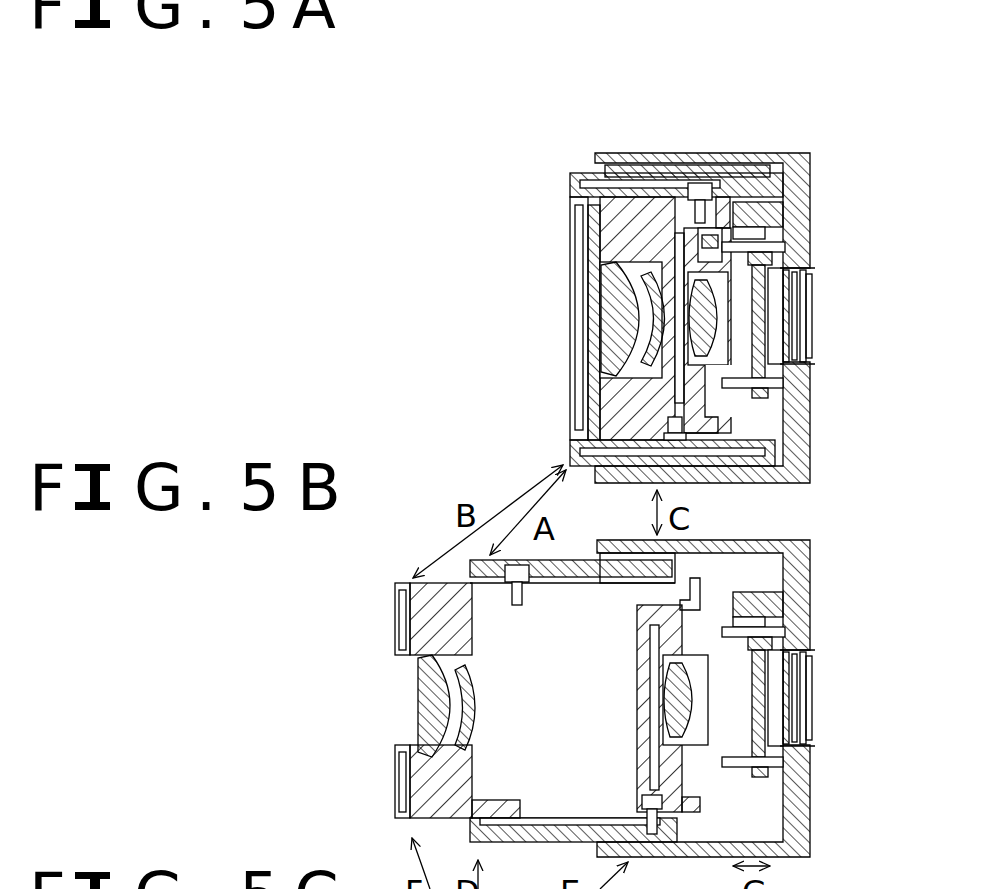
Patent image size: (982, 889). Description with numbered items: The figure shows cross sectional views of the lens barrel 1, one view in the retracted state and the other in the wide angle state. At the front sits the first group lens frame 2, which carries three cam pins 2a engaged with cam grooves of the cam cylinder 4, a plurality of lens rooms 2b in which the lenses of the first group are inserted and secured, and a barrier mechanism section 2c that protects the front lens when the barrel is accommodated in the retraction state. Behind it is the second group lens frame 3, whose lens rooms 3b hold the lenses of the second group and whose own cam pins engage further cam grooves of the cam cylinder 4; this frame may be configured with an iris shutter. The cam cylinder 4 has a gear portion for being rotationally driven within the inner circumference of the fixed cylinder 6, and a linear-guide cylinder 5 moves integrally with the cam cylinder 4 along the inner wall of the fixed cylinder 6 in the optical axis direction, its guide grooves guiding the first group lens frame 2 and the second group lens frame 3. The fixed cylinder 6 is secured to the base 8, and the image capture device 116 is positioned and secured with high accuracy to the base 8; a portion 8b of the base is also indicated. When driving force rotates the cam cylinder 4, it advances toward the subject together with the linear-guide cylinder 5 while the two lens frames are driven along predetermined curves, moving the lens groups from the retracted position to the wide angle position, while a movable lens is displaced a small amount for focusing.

The lens barrel 1 is at (553, 158).
The first group lens frame 2 is at (610, 430).
The cam pins 2a is at (700, 165).
The lens rooms 2b is at (608, 387).
The barrier mechanism section 2c is at (585, 330).
The second group lens frame 3 is at (668, 165).
The lens rooms 3b is at (724, 165).
The cam cylinder 4 is at (588, 172).
The linear-guide cylinder 5 is at (619, 165).
The fixed cylinder 6 is at (761, 160).
The base 8 is at (790, 235).
The holder fixing portion 8b is at (735, 390).
The image capture device 116 is at (800, 345).